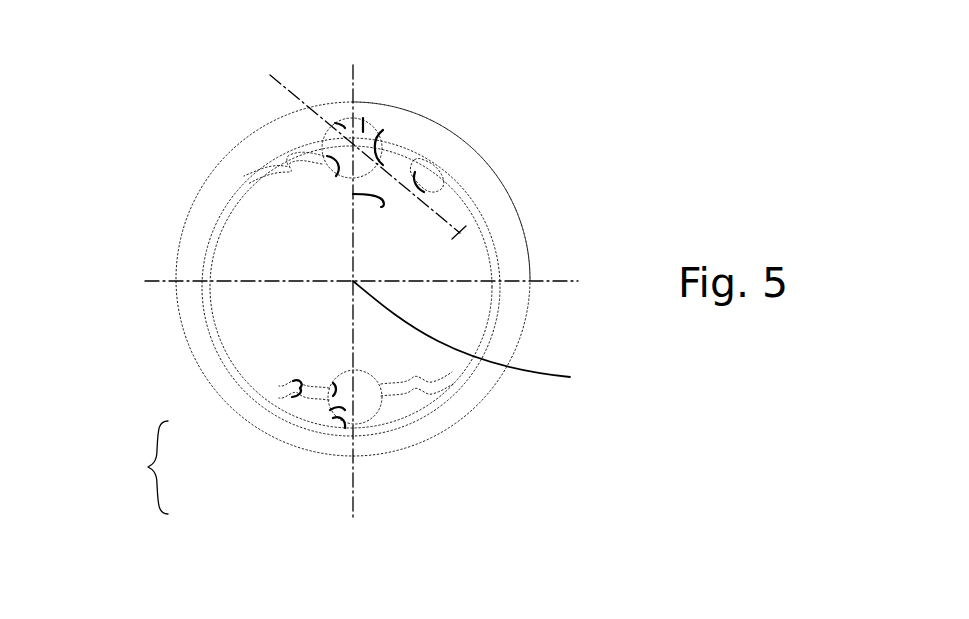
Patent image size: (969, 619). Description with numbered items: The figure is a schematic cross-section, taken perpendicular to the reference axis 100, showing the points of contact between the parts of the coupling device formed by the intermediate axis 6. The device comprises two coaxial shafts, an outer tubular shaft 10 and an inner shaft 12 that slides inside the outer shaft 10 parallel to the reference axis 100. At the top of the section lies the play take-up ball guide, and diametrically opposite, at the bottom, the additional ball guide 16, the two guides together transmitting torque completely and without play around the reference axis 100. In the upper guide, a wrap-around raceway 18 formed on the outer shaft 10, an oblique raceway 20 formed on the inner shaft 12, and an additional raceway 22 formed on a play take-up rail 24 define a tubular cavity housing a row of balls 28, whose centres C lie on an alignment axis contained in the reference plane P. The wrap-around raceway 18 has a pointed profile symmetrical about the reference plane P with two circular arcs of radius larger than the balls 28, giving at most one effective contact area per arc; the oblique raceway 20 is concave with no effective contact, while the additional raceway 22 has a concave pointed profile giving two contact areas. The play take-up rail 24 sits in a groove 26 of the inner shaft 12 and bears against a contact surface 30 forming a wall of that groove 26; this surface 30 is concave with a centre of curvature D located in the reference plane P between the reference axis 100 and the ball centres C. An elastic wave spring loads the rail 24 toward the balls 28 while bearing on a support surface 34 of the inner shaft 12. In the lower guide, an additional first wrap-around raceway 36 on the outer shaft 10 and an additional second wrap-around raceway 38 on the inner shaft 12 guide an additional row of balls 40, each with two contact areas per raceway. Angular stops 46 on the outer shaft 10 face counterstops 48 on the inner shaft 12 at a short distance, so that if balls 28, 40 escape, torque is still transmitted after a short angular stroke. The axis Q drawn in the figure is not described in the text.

The intermediate axis 6 is at (128, 254).
The outer tubular shaft 10 is at (508, 305).
The inner shaft 12 is at (480, 262).
The additional ball guide 16 is at (281, 443).
The wrap-around raceway 18 is at (335, 123).
The oblique raceway 20 is at (327, 156).
The additional raceway 22 is at (383, 130).
The play take-up rail 24 is at (415, 172).
The groove 26 is at (405, 163).
The balls 28 is at (363, 132).
The contact surface 30 is at (415, 172).
The support surface 34 is at (353, 194).
The additional first wrap-around raceway 36 is at (333, 418).
The additional second wrap-around raceway 38 is at (333, 383).
The additional row of balls 40 is at (330, 410).
The angular stops 46 is at (292, 397).
The counterstops 48 is at (293, 381).
The reference axis 100 is at (490, 337).
The centres of the balls C is at (350, 147).
The centre of curvature D is at (350, 148).
The reference plane P is at (350, 490).
The transverse axis Q is at (470, 226).